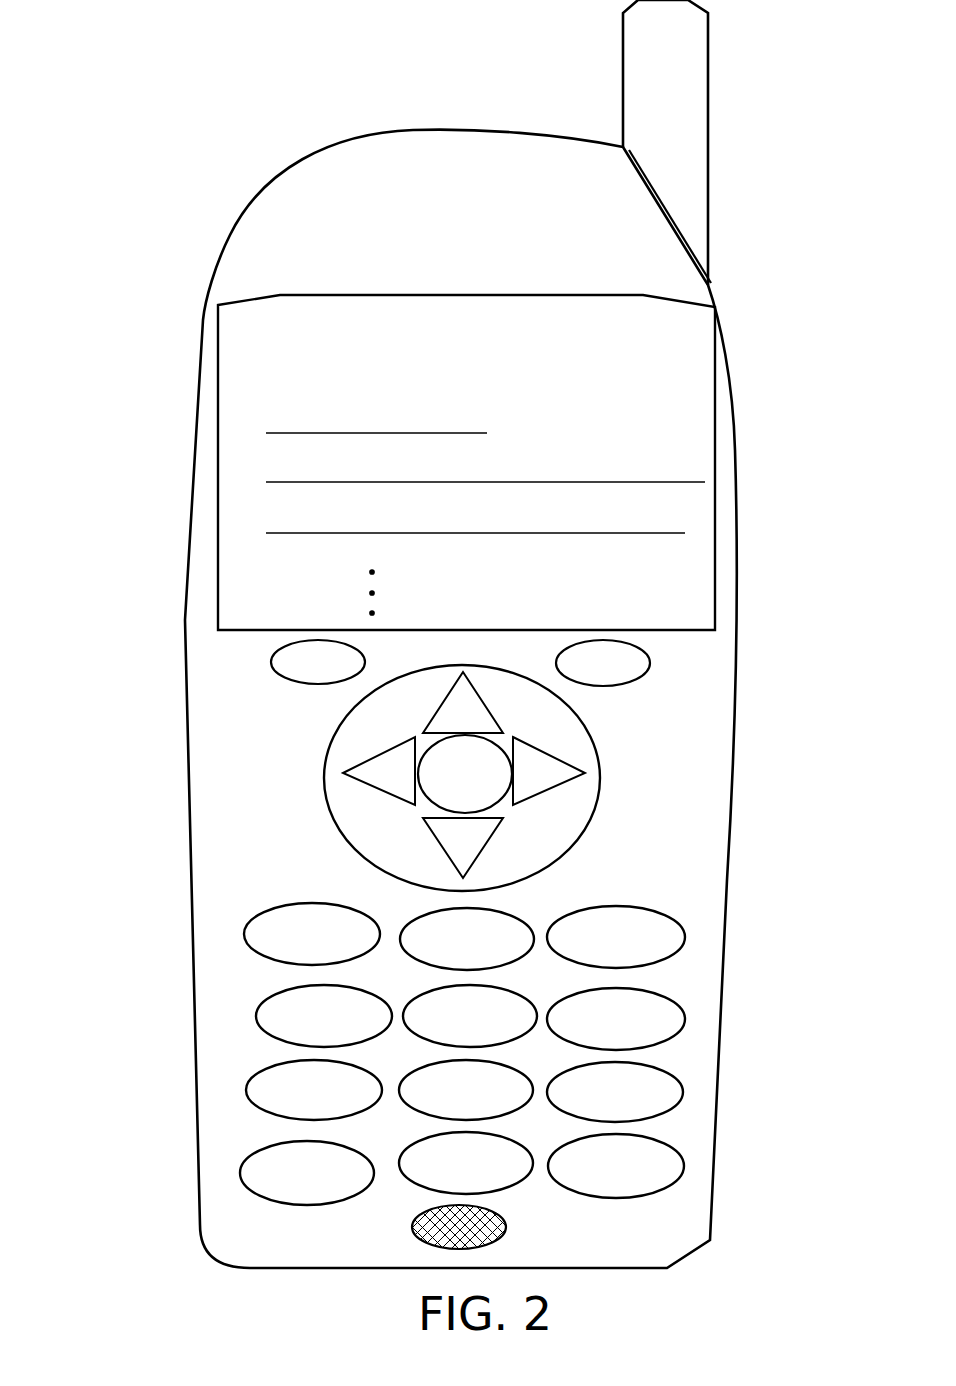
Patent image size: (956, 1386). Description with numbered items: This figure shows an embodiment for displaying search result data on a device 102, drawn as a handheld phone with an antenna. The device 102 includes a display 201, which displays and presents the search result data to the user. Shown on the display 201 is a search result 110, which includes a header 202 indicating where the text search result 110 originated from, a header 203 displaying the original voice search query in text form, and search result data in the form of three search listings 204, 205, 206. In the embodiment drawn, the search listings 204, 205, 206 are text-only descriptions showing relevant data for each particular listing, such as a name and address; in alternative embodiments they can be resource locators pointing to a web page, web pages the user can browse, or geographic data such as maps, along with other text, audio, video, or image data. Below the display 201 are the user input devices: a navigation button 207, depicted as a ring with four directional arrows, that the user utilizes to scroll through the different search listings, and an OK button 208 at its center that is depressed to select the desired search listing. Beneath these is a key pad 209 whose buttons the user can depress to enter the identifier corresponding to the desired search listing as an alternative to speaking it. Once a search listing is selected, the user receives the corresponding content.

The device 102 is at (230, 235).
The search result 110 is at (740, 307).
The display 201 is at (430, 293).
The header 202 is at (230, 320).
The header 203 is at (230, 378).
The search listing 204 is at (230, 420).
The search listing 205 is at (230, 475).
The search listing 206 is at (230, 520).
The navigation button 207 is at (600, 777).
The OK button 208 is at (500, 743).
The key pad 209 is at (695, 902).